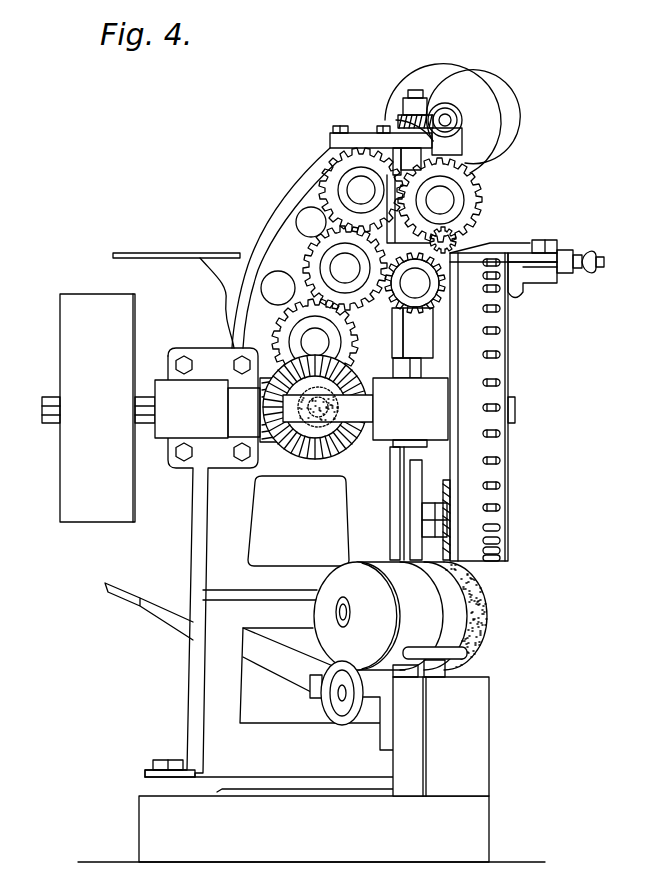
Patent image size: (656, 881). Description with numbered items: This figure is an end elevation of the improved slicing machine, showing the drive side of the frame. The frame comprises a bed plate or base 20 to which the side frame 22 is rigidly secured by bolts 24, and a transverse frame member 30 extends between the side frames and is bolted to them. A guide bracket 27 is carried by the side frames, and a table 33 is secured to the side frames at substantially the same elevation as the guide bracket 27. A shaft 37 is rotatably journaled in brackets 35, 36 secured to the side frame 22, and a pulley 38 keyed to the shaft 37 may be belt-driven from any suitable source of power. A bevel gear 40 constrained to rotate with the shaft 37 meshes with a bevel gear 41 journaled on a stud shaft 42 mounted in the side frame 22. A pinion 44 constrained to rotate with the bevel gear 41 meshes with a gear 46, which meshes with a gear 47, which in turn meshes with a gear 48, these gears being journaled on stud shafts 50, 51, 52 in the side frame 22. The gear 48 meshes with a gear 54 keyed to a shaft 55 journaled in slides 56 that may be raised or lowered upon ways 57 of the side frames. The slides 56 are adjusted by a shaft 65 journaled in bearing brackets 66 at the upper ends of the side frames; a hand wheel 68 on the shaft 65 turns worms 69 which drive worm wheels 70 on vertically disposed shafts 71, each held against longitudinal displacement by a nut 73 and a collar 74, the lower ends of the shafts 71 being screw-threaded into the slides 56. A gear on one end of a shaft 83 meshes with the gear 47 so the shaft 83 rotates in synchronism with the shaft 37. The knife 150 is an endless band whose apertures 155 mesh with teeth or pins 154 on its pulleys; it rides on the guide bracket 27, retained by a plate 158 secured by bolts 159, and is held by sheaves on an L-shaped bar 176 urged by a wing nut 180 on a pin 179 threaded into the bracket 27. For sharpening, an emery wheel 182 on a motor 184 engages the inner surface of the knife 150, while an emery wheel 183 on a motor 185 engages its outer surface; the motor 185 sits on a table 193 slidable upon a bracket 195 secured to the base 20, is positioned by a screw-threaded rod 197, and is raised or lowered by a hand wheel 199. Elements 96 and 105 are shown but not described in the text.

The bed plate or base 20 is at (488, 827).
The side frame 22 is at (253, 246).
The bolts 24 is at (162, 760).
The guide bracket 27 is at (557, 282).
The transverse frame member 30 is at (416, 343).
The table 33 is at (143, 256).
The bracket 35 is at (393, 445).
The bracket 36 is at (168, 396).
The shaft 37 is at (49, 399).
The pulley 38 is at (70, 355).
The bevel gear 40 is at (255, 411).
The bevel gear 41 is at (286, 455).
The stud shaft 42 is at (337, 452).
The pinion 44 is at (358, 386).
The gear 46 is at (270, 333).
The gear 47 is at (306, 234).
The gear 48 is at (362, 134).
The stud shaft 50 is at (312, 342).
The stud shaft 51 is at (344, 268).
The stud shaft 52 is at (358, 188).
The gear 54 is at (478, 184).
The shaft 55 is at (447, 200).
The slides 56 is at (404, 238).
The ways 57 is at (395, 155).
The shaft 65 is at (462, 108).
The bearing brackets 66 is at (346, 126).
The hand wheel 68 is at (478, 74).
The worms 69 is at (445, 114).
The worm wheels 70 is at (398, 118).
The vertically disposed shafts 71 is at (415, 90).
The nut 73 is at (424, 98).
The collar 74 is at (412, 152).
The shaft 83 is at (406, 285).
The cover plate 96 is at (450, 253).
The arm 105 is at (270, 657).
The knife 150 is at (508, 372).
The teeth or pins 154 is at (512, 398).
The apertures 155 is at (503, 484).
The plate 158 is at (556, 242).
The bolts 159 is at (542, 240).
The L-shaped bar 176 is at (565, 257).
The pin 179 is at (604, 262).
The wing nut 180 is at (594, 258).
The emery wheel 182 is at (422, 513).
The emery wheel 183 is at (488, 622).
The electrical motor 184 is at (414, 474).
The electrical motor 185 is at (347, 577).
The table 193 is at (309, 686).
The bracket 195 is at (479, 714).
The screw-threaded rod 197 is at (343, 712).
The hand wheel 199 is at (468, 656).